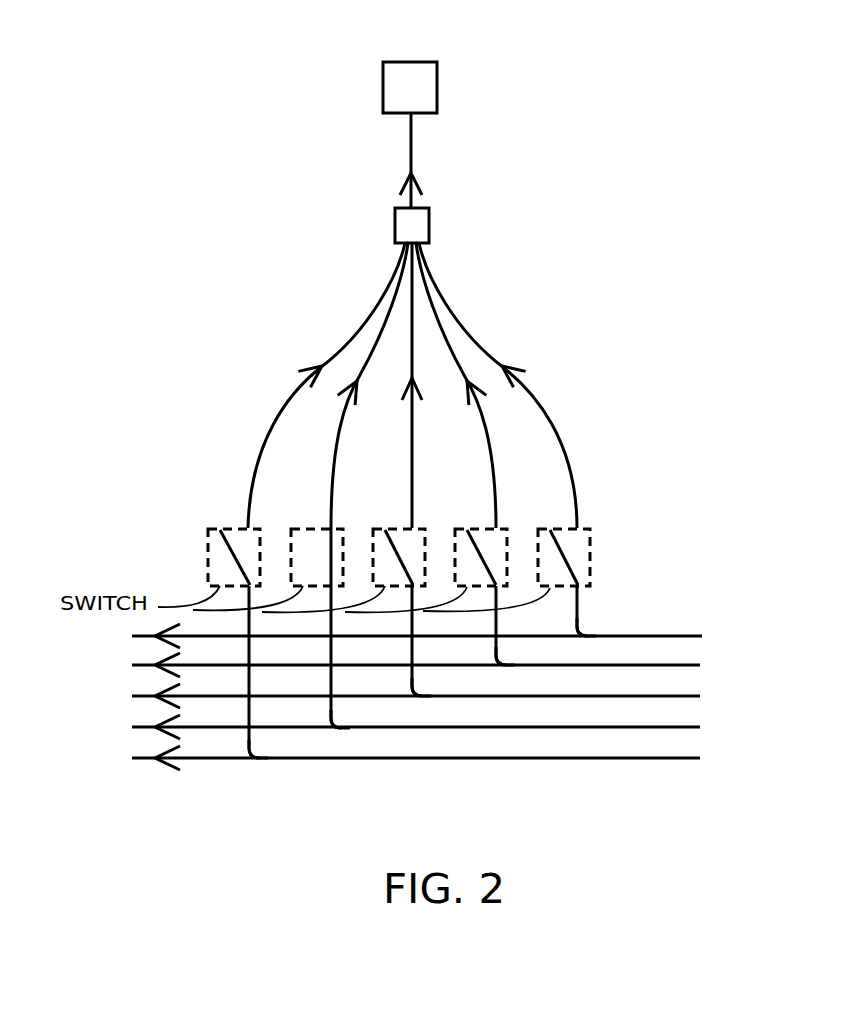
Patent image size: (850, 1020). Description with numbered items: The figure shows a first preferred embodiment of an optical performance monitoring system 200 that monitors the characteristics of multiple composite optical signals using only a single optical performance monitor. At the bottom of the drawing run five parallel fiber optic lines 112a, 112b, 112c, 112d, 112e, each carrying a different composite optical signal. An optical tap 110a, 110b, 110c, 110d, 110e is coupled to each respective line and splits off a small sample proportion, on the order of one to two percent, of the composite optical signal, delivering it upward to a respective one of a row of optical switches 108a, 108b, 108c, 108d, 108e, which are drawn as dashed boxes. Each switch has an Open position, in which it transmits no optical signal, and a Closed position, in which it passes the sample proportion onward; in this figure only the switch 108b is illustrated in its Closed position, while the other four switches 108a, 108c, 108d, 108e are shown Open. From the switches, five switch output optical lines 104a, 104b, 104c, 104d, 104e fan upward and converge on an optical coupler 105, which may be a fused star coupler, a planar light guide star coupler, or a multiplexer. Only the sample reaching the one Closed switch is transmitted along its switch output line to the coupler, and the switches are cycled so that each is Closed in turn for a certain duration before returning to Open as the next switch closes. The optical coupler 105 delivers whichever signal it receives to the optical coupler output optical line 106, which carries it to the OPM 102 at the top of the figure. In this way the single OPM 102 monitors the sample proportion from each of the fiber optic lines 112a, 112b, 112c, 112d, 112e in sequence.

The optical performance monitoring system 200 is at (162, 142).
The OPM 102 is at (437, 75).
The optical coupler 105 is at (429, 209).
The optical coupler output optical line 106 is at (413, 155).
The switch output optical line 104a is at (251, 493).
The switch output optical line 104b is at (332, 490).
The switch output optical line 104c is at (412, 488).
The switch output optical line 104d is at (494, 490).
The switch output optical line 104e is at (577, 490).
The optical switch 108a is at (277, 518).
The optical switch 108b is at (360, 518).
The optical switch 108c is at (443, 518).
The optical switch 108d is at (525, 518).
The optical switch 108e is at (590, 556).
The optical tap 110a is at (268, 757).
The optical tap 110b is at (351, 727).
The optical tap 110c is at (433, 696).
The optical tap 110d is at (515, 665).
The optical tap 110e is at (598, 636).
The fiber optic line 112a is at (688, 758).
The fiber optic line 112b is at (685, 727).
The fiber optic line 112c is at (690, 696).
The fiber optic line 112d is at (685, 666).
The fiber optic line 112e is at (697, 636).